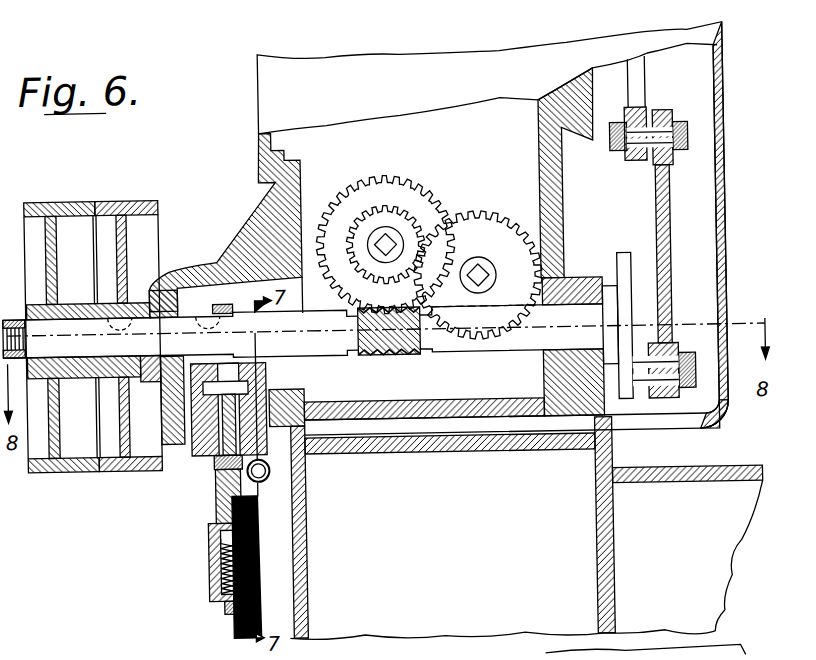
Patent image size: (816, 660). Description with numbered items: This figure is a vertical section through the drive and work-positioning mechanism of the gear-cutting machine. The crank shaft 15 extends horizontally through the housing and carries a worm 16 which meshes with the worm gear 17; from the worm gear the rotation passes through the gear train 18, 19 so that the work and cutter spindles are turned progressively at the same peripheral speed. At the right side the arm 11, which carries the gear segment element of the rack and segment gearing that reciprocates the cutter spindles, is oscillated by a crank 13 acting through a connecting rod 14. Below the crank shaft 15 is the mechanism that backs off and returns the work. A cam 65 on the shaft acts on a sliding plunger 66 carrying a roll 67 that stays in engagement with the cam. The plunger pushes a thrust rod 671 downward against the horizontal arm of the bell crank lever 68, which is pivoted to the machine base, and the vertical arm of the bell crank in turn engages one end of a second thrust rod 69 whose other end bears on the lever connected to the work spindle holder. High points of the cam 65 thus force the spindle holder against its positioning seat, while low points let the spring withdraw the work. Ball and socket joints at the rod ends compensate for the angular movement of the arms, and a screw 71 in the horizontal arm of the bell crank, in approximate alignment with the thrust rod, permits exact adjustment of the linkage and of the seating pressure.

The arm 11 is at (637, 93).
The crank 13 is at (697, 368).
The connecting rod 14 is at (672, 266).
The crank shaft 15 is at (322, 350).
The worm 16 is at (390, 352).
The worm gear 17 is at (403, 182).
The gear train gear 18 is at (408, 230).
The gear train gear 19 is at (504, 226).
The cam 65 is at (218, 300).
The sliding plunger 66 is at (207, 452).
The roll 67 is at (228, 362).
The bell crank lever 68 is at (213, 558).
The thrust rod 69 is at (262, 478).
The screw 71 is at (212, 582).
The thrust rod 671 is at (217, 494).